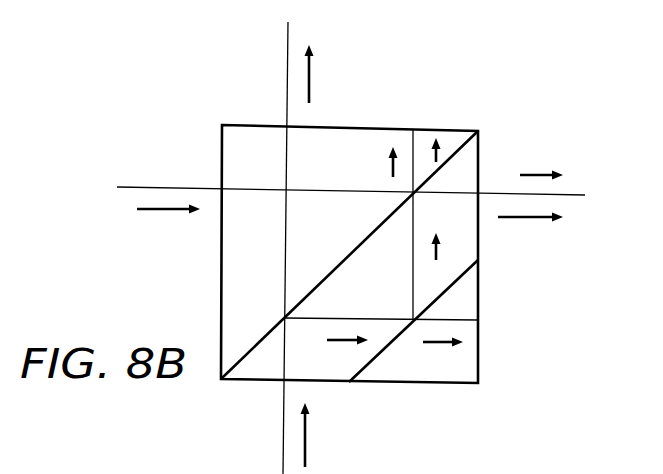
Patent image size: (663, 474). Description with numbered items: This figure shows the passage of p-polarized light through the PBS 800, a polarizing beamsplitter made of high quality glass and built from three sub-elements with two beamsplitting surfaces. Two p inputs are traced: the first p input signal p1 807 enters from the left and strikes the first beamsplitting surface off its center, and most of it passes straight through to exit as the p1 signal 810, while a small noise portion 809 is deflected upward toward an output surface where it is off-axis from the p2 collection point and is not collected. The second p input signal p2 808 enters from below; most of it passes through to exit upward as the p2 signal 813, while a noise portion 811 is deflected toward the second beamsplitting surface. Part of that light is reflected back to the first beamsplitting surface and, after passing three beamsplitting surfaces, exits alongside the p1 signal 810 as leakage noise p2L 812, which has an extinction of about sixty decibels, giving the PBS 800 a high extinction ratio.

The PBS 800 is at (216, 82).
The p input signal p1 807 is at (163, 238).
The p input signal p2 808 is at (343, 443).
The noise portion 809 is at (390, 163).
The p1 signal 810 is at (530, 253).
The noise portion 811 is at (343, 338).
The leakage noise p2L 812 is at (538, 140).
The p2 signal 813 is at (353, 48).